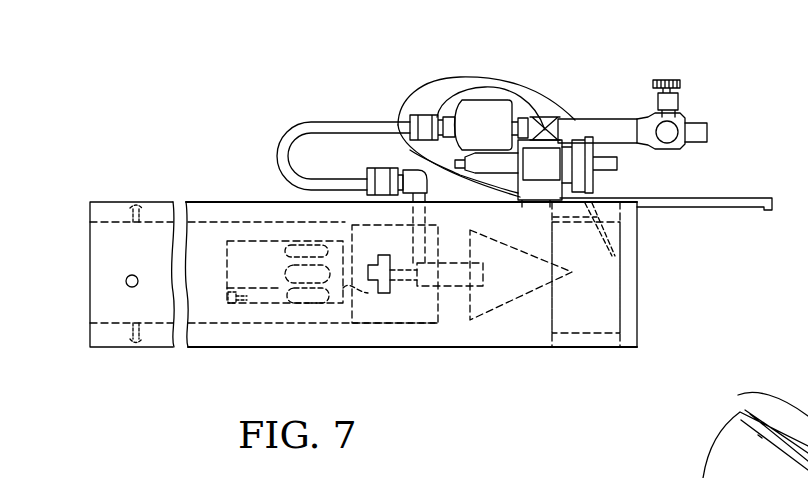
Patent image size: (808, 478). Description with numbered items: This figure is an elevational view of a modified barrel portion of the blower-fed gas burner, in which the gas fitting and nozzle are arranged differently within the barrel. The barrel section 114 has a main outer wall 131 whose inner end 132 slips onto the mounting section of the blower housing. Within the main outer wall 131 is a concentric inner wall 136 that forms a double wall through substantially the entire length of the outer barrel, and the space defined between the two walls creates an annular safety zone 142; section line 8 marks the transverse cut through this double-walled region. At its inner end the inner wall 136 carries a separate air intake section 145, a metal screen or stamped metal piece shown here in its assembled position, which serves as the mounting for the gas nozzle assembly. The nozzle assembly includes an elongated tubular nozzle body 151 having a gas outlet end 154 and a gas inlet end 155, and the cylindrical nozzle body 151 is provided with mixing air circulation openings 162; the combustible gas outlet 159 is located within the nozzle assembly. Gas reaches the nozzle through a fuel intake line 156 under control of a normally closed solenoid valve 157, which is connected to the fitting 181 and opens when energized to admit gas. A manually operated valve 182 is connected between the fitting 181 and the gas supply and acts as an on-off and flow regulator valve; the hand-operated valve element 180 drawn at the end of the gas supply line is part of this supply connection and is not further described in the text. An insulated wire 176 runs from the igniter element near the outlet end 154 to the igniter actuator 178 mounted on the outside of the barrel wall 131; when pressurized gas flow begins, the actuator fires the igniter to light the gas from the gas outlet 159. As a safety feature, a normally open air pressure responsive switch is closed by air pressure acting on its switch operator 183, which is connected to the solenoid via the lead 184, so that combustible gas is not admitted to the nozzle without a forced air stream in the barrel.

The section line 8- 8 is at (157, 173).
The barrel section 114 is at (250, 352).
The main outer wall 131 is at (490, 348).
The inner end 132 is at (638, 341).
The inner concentric wall 136 is at (302, 324).
The annular safety zone 142 is at (204, 349).
The air intake section 145 is at (408, 323).
The tubular nozzle body 151 is at (250, 236).
The gas outlet end 154 is at (228, 245).
The gas inlet end 155 is at (392, 245).
The fuel intake line 156 is at (440, 215).
The solenoid valve 157 is at (506, 114).
The combustible gas outlet 159 is at (372, 300).
The mixing air circulation openings 162 is at (302, 258).
The insulated wire 176 is at (430, 166).
The igniter actuator 178 is at (544, 167).
The valve 180 is at (681, 103).
The fitting 181 is at (587, 128).
The manually operated valve 182 is at (596, 203).
The switch operator 183 is at (604, 245).
The lead 184 is at (404, 104).